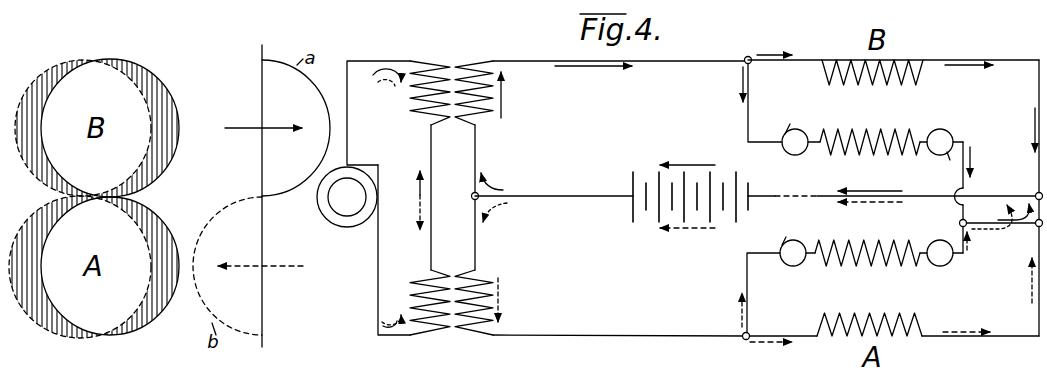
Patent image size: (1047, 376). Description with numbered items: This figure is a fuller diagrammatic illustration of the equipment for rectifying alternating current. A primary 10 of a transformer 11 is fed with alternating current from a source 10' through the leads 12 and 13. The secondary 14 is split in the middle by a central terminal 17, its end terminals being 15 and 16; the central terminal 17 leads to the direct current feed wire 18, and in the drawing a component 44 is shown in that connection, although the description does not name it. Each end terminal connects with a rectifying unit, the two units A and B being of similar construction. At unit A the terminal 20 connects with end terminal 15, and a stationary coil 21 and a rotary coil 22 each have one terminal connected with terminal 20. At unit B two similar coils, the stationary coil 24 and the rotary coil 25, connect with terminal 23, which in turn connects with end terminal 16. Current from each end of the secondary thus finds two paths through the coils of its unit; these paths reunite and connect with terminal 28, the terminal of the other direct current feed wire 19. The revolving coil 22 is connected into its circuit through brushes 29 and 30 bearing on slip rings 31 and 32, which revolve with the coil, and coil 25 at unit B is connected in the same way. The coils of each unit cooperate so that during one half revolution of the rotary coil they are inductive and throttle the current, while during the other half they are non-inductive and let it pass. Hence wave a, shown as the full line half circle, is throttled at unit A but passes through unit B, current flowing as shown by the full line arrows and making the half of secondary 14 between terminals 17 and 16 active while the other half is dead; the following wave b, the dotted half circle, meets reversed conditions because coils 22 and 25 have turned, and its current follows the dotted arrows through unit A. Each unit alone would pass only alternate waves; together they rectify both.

The primary 10 is at (419, 198).
The source 10' is at (347, 197).
The transformer 11 is at (442, 197).
The lead 12 is at (380, 230).
The lead 13 is at (350, 127).
The secondary 14 is at (490, 123).
The end terminal 15 is at (513, 335).
The end terminal 16 is at (533, 62).
The central terminal 17 is at (472, 198).
The direct current feed wire 18 is at (777, 196).
The direct current feed wire 19 is at (820, 188).
The terminal 20 is at (745, 340).
The stationary coil 21 is at (852, 317).
The rotary coil 22 is at (885, 258).
The terminal 23 is at (748, 57).
The stationary coil 24 is at (853, 84).
The rotary coil 25 is at (872, 127).
The terminal 28 is at (1037, 193).
The brush 29 is at (954, 258).
The brush 30 is at (787, 240).
The slip ring 31 is at (788, 266).
The slip ring 32 is at (940, 268).
The battery 44 is at (630, 207).